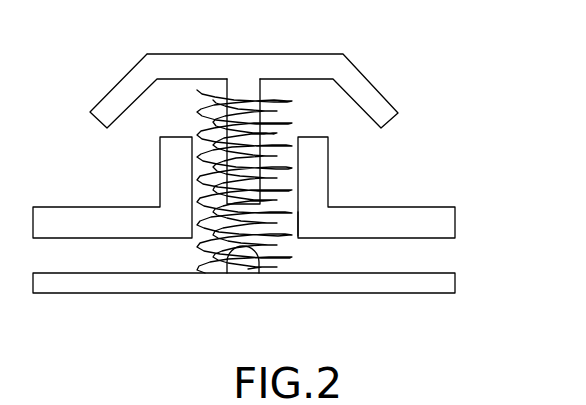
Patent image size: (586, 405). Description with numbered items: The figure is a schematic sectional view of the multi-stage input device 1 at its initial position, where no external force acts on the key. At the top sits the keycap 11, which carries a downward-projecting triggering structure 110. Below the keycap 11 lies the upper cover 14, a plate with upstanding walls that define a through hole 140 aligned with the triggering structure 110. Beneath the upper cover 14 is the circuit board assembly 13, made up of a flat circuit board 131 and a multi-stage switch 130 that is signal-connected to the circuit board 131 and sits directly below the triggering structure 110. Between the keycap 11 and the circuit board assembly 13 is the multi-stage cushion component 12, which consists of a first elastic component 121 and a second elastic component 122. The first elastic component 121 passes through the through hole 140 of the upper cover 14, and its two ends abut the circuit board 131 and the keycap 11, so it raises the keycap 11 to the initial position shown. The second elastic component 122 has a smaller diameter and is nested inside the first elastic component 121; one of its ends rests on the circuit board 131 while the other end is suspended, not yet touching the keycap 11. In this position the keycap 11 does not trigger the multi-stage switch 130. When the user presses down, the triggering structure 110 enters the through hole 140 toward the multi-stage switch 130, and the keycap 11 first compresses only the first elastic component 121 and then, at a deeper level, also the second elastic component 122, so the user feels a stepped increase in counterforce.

The multi-stage input device 1 is at (90, 37).
The keycap 11 is at (358, 92).
The triggering structure 110 is at (244, 88).
The multi-stage cushion component 12 is at (497, 33).
The first elastic component 121 is at (273, 140).
The second elastic component 122 is at (217, 213).
The circuit board assembly 13 is at (497, 115).
The multi-stage switch 130 is at (251, 265).
The circuit board 131 is at (383, 280).
The upper cover 14 is at (373, 218).
The through hole 140 is at (279, 228).